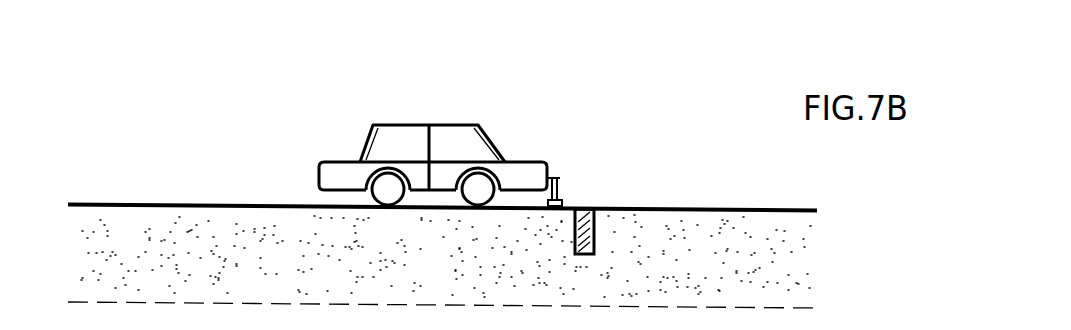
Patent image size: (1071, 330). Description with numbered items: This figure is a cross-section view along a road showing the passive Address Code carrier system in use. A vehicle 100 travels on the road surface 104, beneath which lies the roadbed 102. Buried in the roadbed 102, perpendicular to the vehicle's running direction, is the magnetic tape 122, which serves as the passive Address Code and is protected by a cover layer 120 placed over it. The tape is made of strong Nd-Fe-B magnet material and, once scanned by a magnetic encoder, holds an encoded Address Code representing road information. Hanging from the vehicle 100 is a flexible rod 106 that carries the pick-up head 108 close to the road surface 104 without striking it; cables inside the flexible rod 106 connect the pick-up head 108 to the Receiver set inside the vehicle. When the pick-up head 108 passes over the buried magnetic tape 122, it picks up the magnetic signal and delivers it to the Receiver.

The vehicle 100 is at (388, 137).
The roadbed 102 is at (157, 257).
The road surface 104 is at (240, 204).
The flexible rod 106 is at (555, 178).
The pick-up head 108 is at (637, 173).
The cover layer 120 is at (607, 210).
The magnetic tape 122 is at (597, 237).